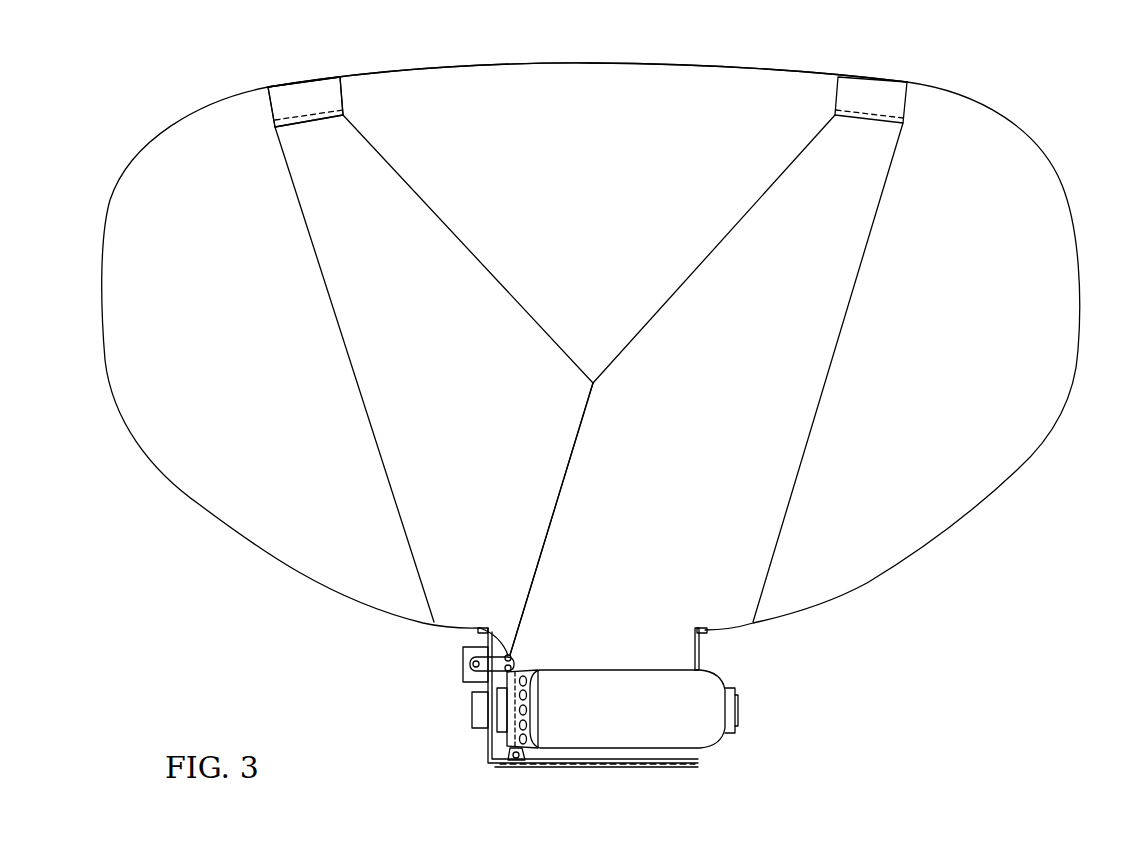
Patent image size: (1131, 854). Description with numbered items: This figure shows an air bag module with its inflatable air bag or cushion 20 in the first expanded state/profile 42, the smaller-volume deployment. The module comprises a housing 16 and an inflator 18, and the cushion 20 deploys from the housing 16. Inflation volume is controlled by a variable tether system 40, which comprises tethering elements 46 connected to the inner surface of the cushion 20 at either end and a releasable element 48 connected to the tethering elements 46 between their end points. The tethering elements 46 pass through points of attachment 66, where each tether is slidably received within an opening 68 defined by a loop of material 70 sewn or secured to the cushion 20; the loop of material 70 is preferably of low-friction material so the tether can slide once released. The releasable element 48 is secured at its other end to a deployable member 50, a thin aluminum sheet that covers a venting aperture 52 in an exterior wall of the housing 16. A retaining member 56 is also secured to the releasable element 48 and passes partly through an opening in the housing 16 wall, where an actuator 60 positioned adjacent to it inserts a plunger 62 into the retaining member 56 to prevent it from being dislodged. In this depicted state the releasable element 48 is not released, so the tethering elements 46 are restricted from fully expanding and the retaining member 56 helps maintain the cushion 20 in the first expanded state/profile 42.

The housing 16 is at (700, 758).
The inflator 18 is at (722, 740).
The inflatable air bag or cushion 20 is at (995, 492).
The variable tether system 40 is at (615, 328).
The first expanded state/profile 42 is at (1035, 124).
The tethering element 46 is at (435, 207).
The releasable element 48 is at (572, 457).
The deployable member 50 is at (548, 766).
The venting aperture 52 is at (520, 768).
The retaining member 56 is at (505, 656).
The actuator 60 is at (470, 690).
The plunger 62 is at (470, 663).
The points of attachment 66 is at (283, 78).
The opening 68 is at (272, 108).
The loop of material 70 is at (315, 90).